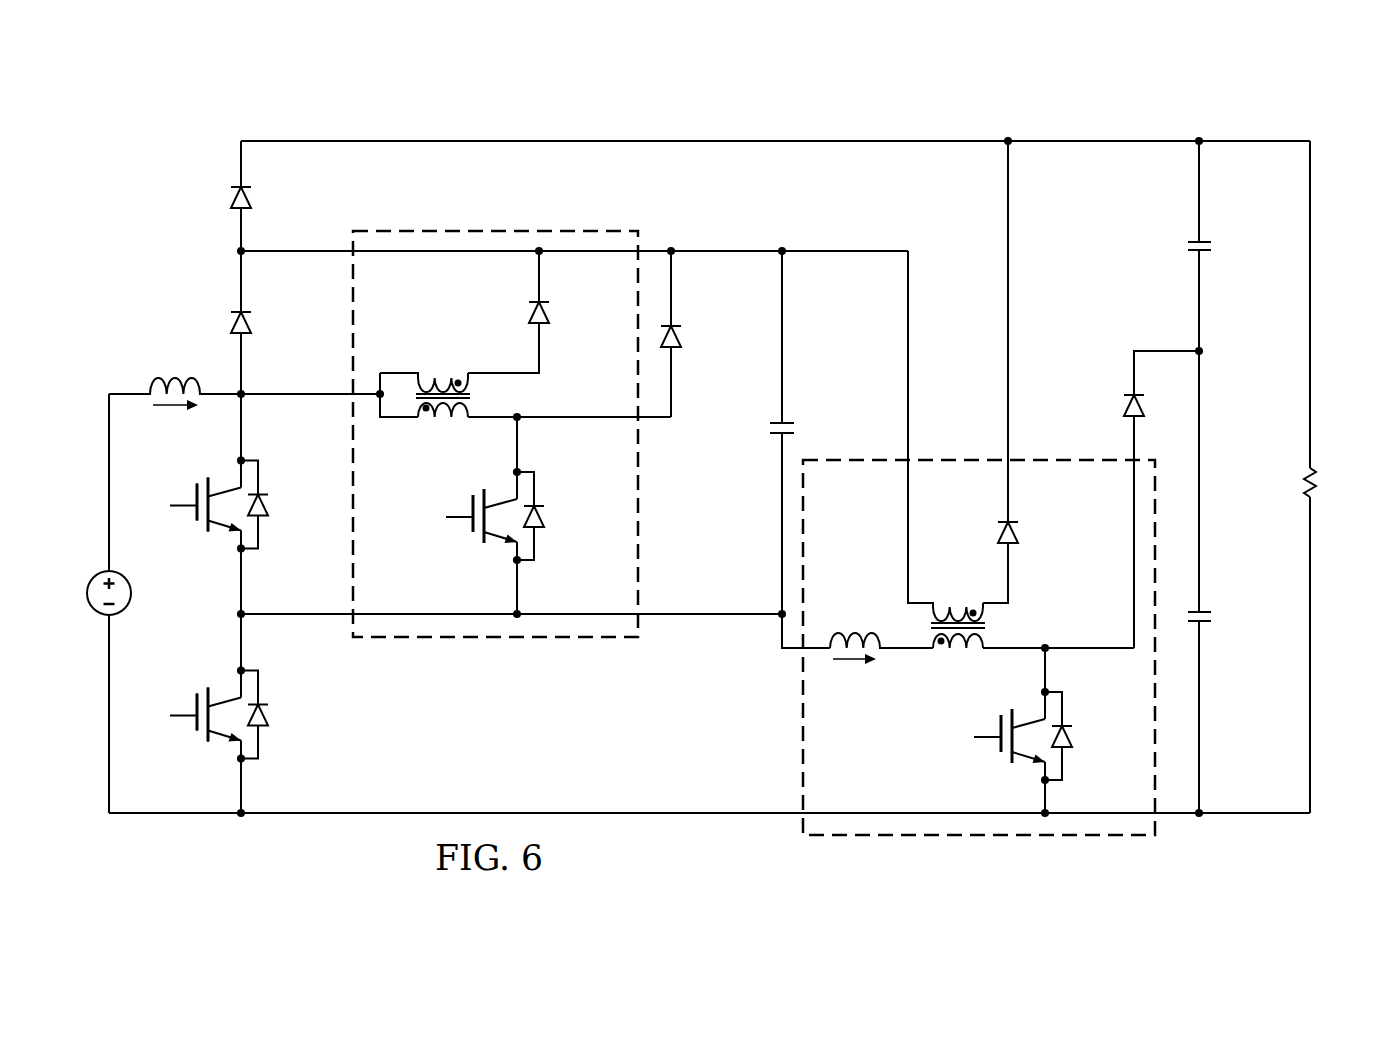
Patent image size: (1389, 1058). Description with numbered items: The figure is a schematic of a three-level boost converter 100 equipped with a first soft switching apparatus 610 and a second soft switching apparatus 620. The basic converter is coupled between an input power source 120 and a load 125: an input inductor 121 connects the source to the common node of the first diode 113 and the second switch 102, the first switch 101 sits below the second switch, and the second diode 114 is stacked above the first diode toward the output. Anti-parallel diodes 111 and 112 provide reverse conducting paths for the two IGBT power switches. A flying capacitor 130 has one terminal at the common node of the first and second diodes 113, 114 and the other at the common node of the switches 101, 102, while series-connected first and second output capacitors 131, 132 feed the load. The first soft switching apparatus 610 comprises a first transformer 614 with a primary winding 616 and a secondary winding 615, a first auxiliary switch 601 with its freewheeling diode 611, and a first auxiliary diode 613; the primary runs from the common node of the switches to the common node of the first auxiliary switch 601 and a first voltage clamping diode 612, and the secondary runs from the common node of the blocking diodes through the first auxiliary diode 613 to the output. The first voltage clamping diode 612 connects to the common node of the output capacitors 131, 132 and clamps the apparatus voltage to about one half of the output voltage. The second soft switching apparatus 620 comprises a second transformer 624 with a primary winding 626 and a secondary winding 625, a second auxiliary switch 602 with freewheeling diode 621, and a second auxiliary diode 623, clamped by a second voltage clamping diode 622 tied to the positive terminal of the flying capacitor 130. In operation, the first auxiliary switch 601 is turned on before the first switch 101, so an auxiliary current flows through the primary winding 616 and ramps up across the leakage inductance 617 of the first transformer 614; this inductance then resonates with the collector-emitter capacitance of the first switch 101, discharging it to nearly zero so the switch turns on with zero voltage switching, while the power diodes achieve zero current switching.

The three-level boost converter 100 is at (428, 105).
The first switch Q1 101 is at (194, 727).
The second switch Q2 102 is at (194, 517).
The diode D1 111 is at (269, 714).
The diode D2 112 is at (269, 504).
The first diode D3 113 is at (252, 323).
The second diode D4 114 is at (231, 197).
The input power source VIN 120 is at (87, 594).
The input inductor L 121 is at (172, 378).
The load RL 125 is at (1318, 488).
The flying capacitor Cdc 130 is at (770, 428).
The first output capacitor C1 131 is at (1213, 246).
The second output capacitor C2 132 is at (1213, 619).
The first auxiliary switch Q11 601 is at (999, 749).
The second auxiliary switch Q21 602 is at (471, 529).
The first soft switching apparatus 610 is at (994, 848).
The diode D11 611 is at (1074, 735).
The first voltage clamping diode D12 612 is at (1124, 407).
The first auxiliary diode D13 613 is at (1018, 532).
The first transformer T1 614 is at (1021, 488).
The secondary winding T1s 615 is at (958, 578).
The primary winding T1p 616 is at (952, 680).
The leakage inductance L1 617 is at (855, 632).
The second soft switching apparatus 620 is at (465, 646).
The diode D21 621 is at (545, 515).
The second voltage clamping diode D22 622 is at (681, 333).
The second auxiliary diode D23 623 is at (549, 311).
The second transformer T2 624 is at (525, 393).
The secondary winding T2s 625 is at (446, 347).
The primary winding T2p 626 is at (440, 447).